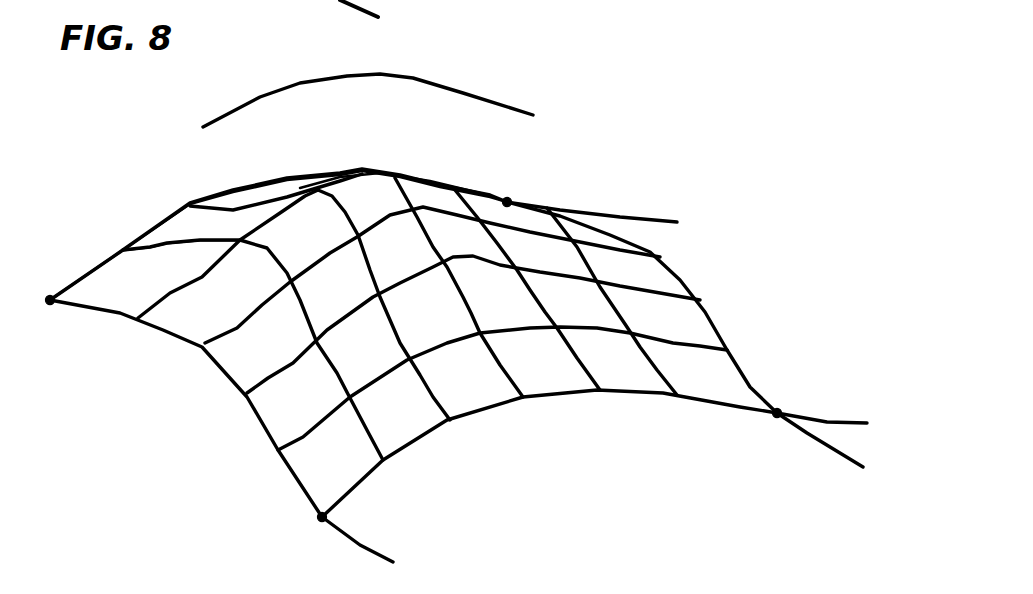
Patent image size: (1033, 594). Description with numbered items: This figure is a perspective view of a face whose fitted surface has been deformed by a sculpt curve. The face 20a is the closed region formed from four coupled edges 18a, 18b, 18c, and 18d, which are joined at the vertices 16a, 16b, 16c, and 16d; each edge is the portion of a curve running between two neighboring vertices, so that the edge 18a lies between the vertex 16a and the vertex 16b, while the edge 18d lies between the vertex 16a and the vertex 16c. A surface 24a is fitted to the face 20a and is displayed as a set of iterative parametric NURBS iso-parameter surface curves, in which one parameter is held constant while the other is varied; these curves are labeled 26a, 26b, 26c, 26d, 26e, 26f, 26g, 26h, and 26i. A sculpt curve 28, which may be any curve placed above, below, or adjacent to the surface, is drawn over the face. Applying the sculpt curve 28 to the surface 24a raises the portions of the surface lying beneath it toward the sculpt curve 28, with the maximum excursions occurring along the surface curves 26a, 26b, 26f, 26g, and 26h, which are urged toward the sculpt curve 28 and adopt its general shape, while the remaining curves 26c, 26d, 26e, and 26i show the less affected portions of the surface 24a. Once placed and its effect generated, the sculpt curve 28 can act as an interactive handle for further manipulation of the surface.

The vertex 16a is at (50, 297).
The vertex 16b is at (327, 513).
The vertex 16c is at (781, 412).
The vertex 16d is at (510, 200).
The edge 18a is at (222, 370).
The edge 18b is at (548, 397).
The edge 18c is at (700, 296).
The edge 18d is at (227, 188).
The face 20a is at (673, 263).
The surface 24a is at (168, 245).
The surface curve 26a is at (200, 277).
The surface curve 26b is at (237, 328).
The surface curve 26c is at (268, 378).
The surface curve 26d is at (303, 437).
The surface curve 26e is at (313, 313).
The surface curve 26f is at (402, 325).
The surface curve 26g is at (473, 313).
The surface curve 26h is at (548, 312).
The surface curve 26i is at (627, 324).
The sculpt curve 28 is at (413, 77).